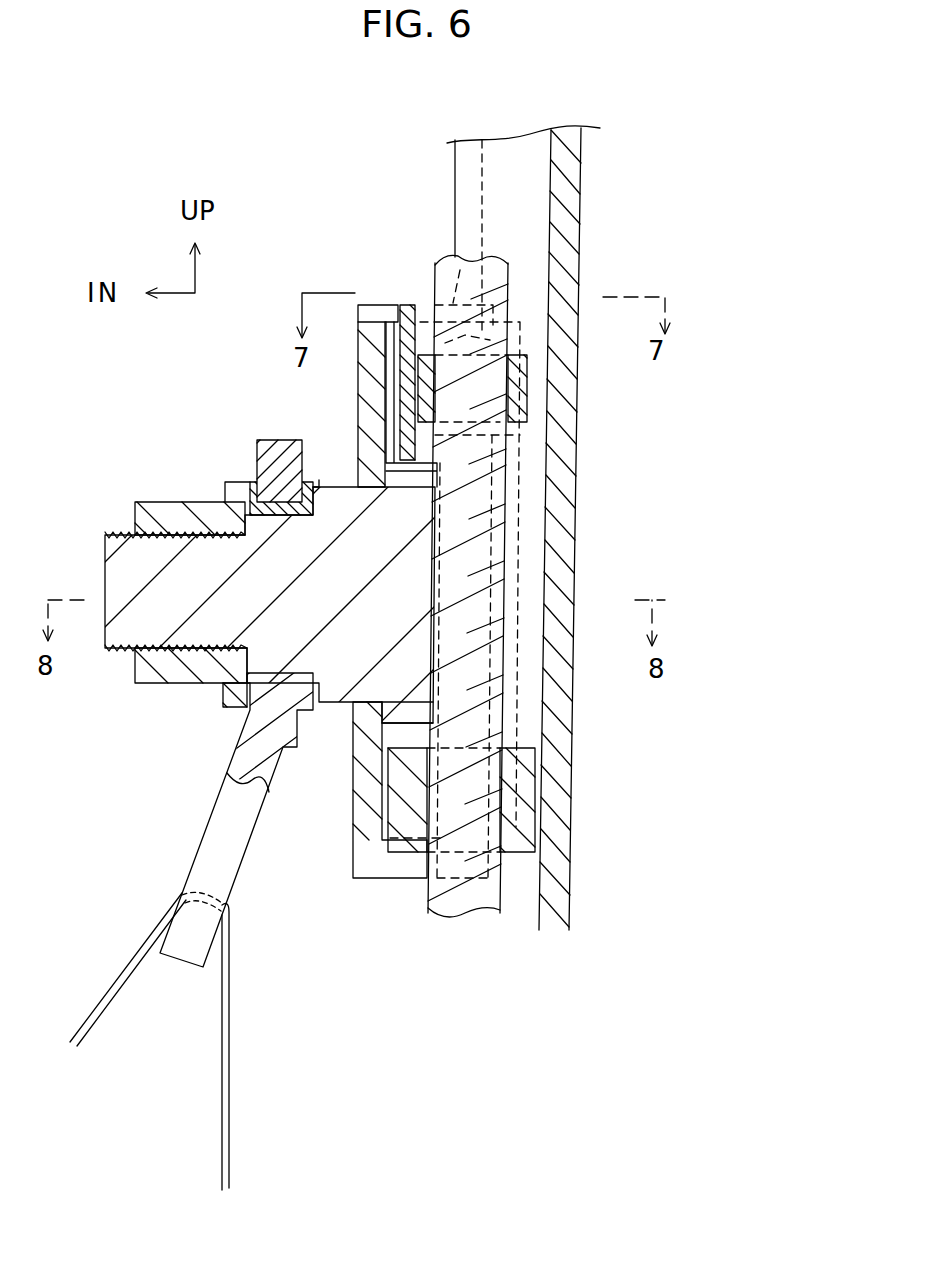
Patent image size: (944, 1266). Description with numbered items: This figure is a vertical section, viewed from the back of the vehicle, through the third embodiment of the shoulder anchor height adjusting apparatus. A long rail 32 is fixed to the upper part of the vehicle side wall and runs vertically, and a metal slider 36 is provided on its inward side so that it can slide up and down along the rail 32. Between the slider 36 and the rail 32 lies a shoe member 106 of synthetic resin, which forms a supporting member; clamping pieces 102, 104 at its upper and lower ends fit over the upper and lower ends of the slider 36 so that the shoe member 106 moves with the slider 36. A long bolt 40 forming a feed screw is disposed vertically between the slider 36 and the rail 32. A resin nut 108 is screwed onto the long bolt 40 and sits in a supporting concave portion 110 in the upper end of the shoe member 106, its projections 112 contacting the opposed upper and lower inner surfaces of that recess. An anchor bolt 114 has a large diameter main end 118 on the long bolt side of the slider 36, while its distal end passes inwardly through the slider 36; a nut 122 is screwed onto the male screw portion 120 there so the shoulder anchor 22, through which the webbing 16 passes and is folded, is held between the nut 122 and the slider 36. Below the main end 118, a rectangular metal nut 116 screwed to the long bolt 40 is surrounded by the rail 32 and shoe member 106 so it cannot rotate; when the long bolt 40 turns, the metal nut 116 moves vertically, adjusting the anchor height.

The webbing 16 is at (229, 1062).
The shoulder anchor 22 is at (200, 873).
The rail 32 is at (582, 186).
The slider 36 is at (357, 382).
The long bolt 40 is at (497, 897).
The clamping piece 102 is at (390, 307).
The clamping piece 104 is at (377, 868).
The shoe member 106 is at (496, 517).
The resin nut 108 is at (527, 387).
The supporting concave portion 110 is at (455, 223).
The projections 112 is at (480, 313).
The anchor bolt 114 is at (212, 627).
The metal nut 116 is at (523, 815).
The large diameter main end 118 is at (405, 712).
The male screw portion 120 is at (160, 665).
The nut 122 is at (157, 657).